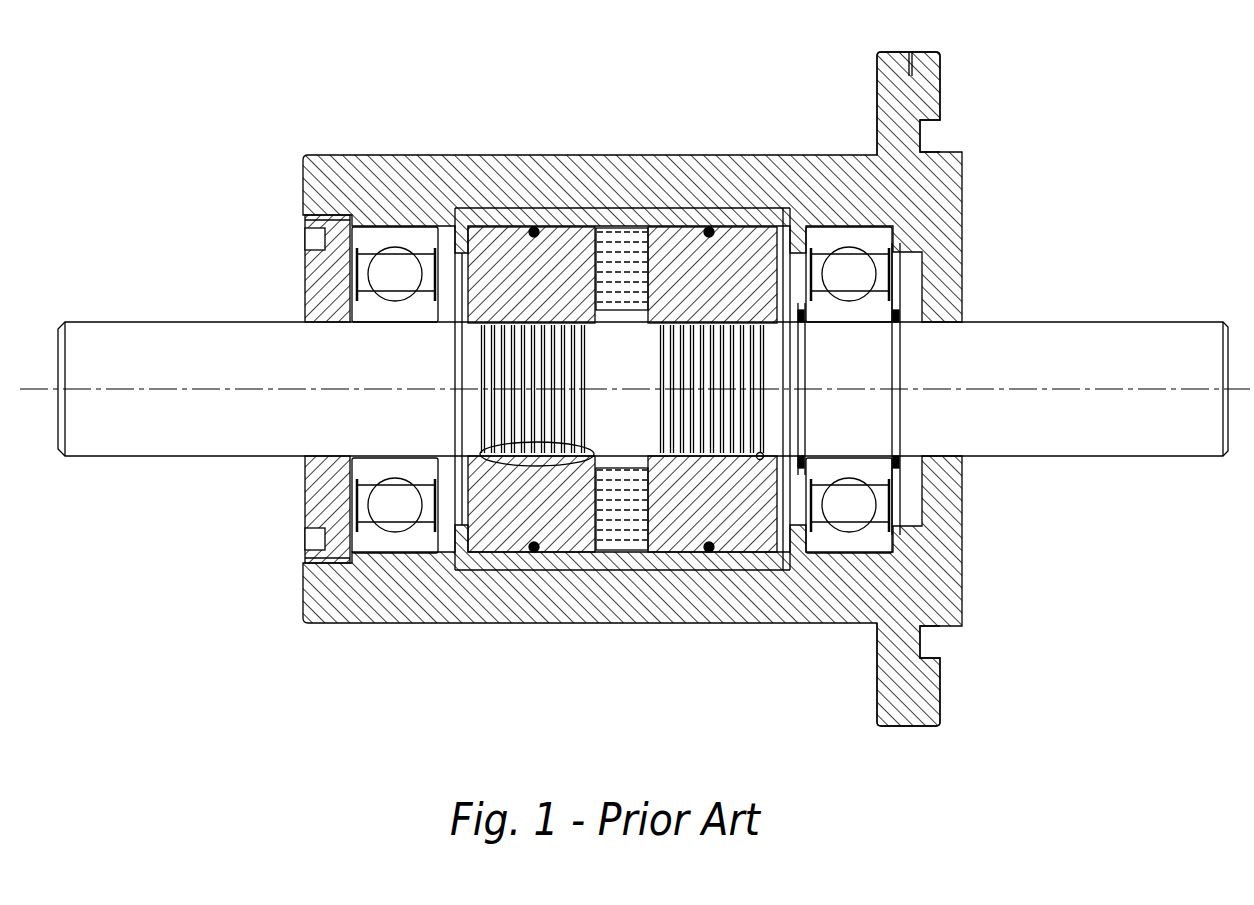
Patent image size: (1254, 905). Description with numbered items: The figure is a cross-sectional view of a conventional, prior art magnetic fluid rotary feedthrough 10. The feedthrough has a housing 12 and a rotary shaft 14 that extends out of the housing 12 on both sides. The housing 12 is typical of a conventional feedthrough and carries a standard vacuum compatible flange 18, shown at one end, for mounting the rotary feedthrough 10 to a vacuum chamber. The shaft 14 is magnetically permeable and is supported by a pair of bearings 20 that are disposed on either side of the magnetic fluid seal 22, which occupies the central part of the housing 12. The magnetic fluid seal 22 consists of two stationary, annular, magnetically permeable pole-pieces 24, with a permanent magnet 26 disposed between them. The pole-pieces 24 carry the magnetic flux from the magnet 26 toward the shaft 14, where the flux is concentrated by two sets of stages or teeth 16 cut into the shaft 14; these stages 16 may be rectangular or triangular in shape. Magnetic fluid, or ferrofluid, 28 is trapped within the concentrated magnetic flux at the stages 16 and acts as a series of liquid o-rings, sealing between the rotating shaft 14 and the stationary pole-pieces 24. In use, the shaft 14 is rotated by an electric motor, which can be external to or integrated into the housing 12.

The magnetic fluid rotary feedthrough 10 is at (635, 375).
The housing 12 is at (423, 153).
The rotary shaft 14 is at (1031, 322).
The stages or teeth 16 is at (530, 468).
The vacuum compatible flange 18 is at (940, 85).
The bearings 20 is at (403, 518).
The magnetic fluid seal 22 is at (455, 409).
The pole-pieces 24 is at (735, 255).
The permanent magnet 26 is at (620, 252).
The magnetic fluid 28 is at (758, 460).